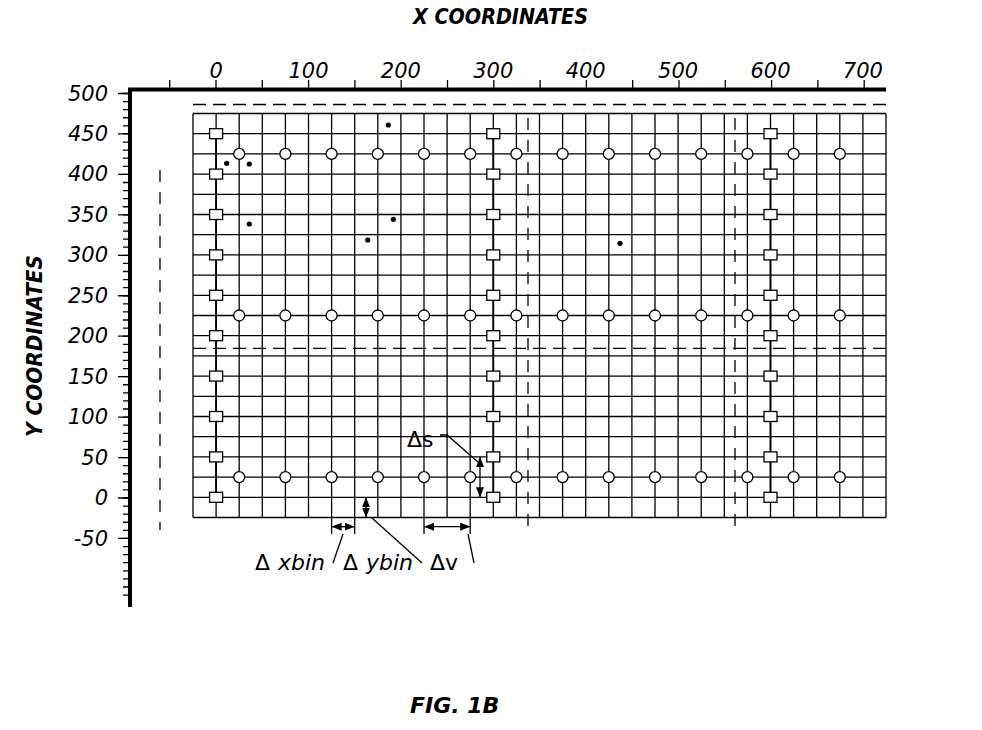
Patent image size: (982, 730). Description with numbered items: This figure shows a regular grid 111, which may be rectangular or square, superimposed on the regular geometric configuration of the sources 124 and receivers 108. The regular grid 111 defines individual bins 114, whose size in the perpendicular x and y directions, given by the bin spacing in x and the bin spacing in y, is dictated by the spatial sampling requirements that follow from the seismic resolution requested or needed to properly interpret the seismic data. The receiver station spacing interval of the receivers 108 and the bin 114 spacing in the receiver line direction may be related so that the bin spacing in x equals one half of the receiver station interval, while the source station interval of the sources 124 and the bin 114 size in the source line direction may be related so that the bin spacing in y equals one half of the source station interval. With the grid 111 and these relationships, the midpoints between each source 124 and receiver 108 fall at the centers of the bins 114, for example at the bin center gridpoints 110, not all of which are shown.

The receiver 108 is at (234, 152).
The bin center gridpoint 110 is at (249, 163).
The regular grid 111 is at (290, 602).
The bin 114 is at (205, 395).
The source 124 is at (213, 507).